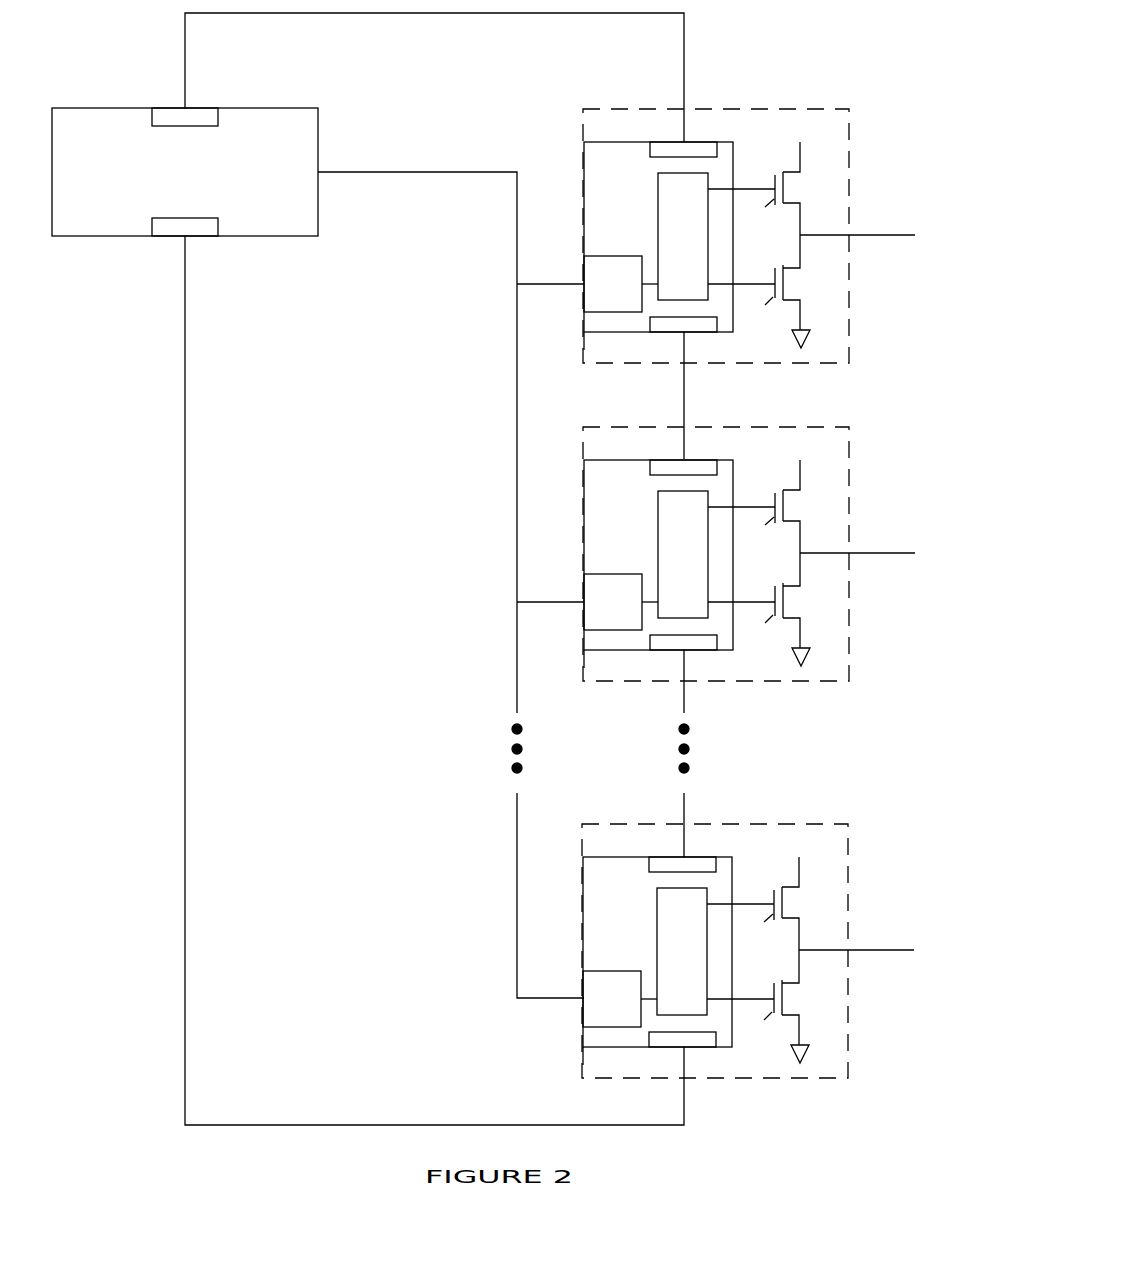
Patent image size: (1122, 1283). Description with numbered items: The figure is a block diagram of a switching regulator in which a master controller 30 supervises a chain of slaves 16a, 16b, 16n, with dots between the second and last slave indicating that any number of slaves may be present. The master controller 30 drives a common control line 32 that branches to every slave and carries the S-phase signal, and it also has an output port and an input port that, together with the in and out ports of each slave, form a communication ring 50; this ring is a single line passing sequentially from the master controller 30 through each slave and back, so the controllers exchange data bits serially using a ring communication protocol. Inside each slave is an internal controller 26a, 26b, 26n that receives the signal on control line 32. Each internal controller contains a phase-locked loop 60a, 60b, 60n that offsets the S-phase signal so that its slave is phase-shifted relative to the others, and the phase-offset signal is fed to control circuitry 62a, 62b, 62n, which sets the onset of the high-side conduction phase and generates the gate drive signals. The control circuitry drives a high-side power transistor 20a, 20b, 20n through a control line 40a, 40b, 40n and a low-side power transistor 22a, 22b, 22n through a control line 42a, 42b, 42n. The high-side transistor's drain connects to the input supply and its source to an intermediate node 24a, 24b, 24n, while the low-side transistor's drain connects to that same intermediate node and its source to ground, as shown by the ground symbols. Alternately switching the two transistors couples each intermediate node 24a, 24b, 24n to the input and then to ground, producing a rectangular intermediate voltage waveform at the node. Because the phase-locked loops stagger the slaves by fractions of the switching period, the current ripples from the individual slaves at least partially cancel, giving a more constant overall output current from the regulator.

The master controller 30 is at (302, 237).
The control line 32 is at (402, 172).
The communication ring 50 is at (450, 13).
The slave 16a is at (583, 363).
The slave 16b is at (695, 579).
The slave 16n is at (687, 971).
The internal controller 26a is at (658, 245).
The internal controller 26b is at (658, 563).
The internal controller 26n is at (657, 960).
The phase-locked loop 60a is at (621, 284).
The phase-locked loop 60b is at (621, 602).
The phase-locked loop 60n is at (620, 999).
The control circuitry 62a is at (683, 236).
The control circuitry 62b is at (683, 554).
The control circuitry 62n is at (682, 951).
The control line 40a is at (750, 187).
The control line 40b is at (745, 478).
The control line 40n is at (743, 873).
The control line 42a is at (747, 283).
The control line 42b is at (742, 577).
The control line 42n is at (743, 974).
The high-side power transistor 20a is at (775, 191).
The high-side power transistor 20b is at (771, 508).
The high-side power transistor 20n is at (773, 904).
The low-side power transistor 22a is at (780, 291).
The low-side power transistor 22b is at (779, 609).
The low-side power transistor 22n is at (773, 1006).
The intermediate node 24a is at (803, 233).
The intermediate node 24b is at (857, 530).
The intermediate node 24n is at (856, 926).